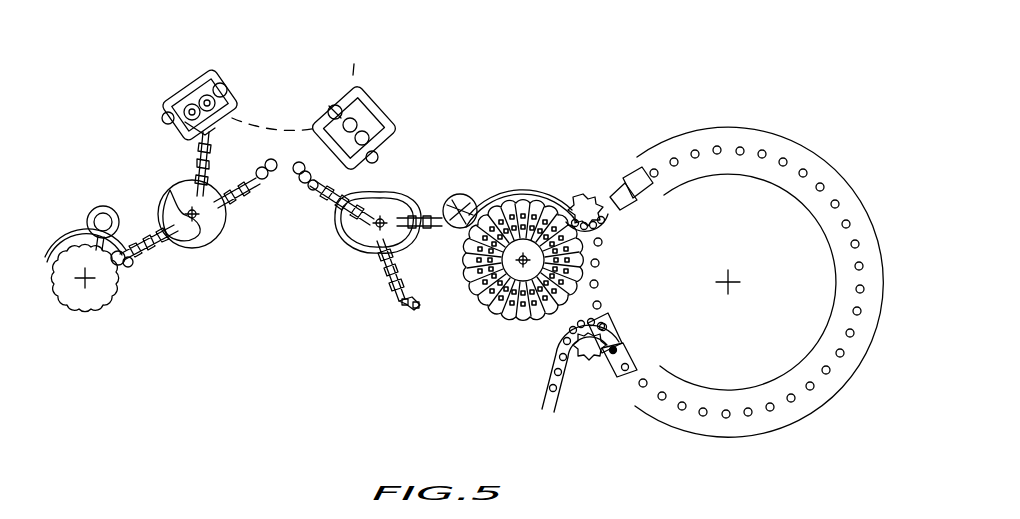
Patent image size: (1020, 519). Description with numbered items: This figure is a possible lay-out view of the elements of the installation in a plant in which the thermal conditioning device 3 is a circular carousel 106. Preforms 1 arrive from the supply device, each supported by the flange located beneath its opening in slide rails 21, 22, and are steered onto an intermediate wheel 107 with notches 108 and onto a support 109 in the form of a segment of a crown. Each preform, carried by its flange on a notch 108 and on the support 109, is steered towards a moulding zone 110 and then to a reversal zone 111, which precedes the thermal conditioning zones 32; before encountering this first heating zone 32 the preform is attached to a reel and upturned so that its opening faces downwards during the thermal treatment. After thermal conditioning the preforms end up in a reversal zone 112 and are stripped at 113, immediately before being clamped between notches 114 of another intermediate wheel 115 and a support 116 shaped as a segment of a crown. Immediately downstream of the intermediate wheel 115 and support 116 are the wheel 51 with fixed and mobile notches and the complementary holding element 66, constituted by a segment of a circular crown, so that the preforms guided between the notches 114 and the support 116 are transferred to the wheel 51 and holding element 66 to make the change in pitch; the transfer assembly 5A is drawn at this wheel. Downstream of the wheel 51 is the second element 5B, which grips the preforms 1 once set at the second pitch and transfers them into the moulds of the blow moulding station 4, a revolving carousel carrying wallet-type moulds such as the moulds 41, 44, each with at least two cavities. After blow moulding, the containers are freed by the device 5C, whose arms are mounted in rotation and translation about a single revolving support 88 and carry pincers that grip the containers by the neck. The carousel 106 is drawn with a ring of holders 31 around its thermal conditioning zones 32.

The preform 1 is at (612, 220).
The thermal conditioning device 3 is at (762, 128).
The blow moulding station 4 is at (375, 65).
The transfer star wheel 5A is at (468, 303).
The second element 5B is at (340, 259).
The device 5C is at (199, 265).
The slide rail 21 is at (548, 387).
The slide rail 22 is at (563, 410).
The container holders 31 is at (815, 388).
The heating zone 32 is at (818, 170).
The mould 41 is at (372, 105).
The mould 44 is at (173, 98).
The wheel 51 is at (512, 308).
The complementary holding element 66 is at (503, 196).
The support 88 is at (168, 188).
The carousel 106 is at (782, 349).
The intermediate wheel 107 is at (584, 356).
The notch 108 is at (597, 358).
The support 109 is at (590, 306).
The moulding zone 110 is at (606, 316).
The reversal zone 111 is at (632, 350).
The reversal zone 112 is at (641, 192).
The stripping location 113 is at (625, 210).
The notch 114 is at (580, 197).
The intermediate wheel 115 is at (588, 196).
The support 116 is at (605, 240).